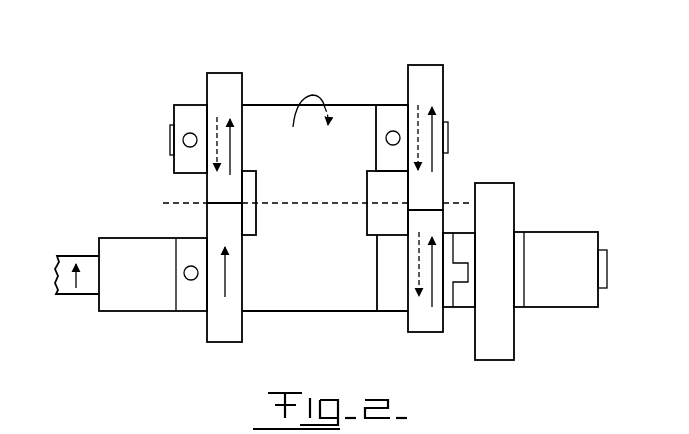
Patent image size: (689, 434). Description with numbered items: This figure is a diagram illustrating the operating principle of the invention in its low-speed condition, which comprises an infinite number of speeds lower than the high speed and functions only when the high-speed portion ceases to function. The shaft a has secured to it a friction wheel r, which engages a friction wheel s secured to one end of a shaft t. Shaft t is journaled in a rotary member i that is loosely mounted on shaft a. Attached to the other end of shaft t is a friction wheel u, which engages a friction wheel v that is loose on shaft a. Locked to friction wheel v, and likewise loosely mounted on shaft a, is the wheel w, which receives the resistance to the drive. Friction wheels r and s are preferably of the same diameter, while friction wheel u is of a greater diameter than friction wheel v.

The shaft a is at (63, 262).
The shaft t is at (172, 136).
The friction wheel s is at (210, 74).
The friction wheel r is at (221, 328).
The rotary member i is at (273, 120).
The friction wheel u is at (428, 88).
The friction wheel v is at (432, 312).
The wheel w is at (500, 193).